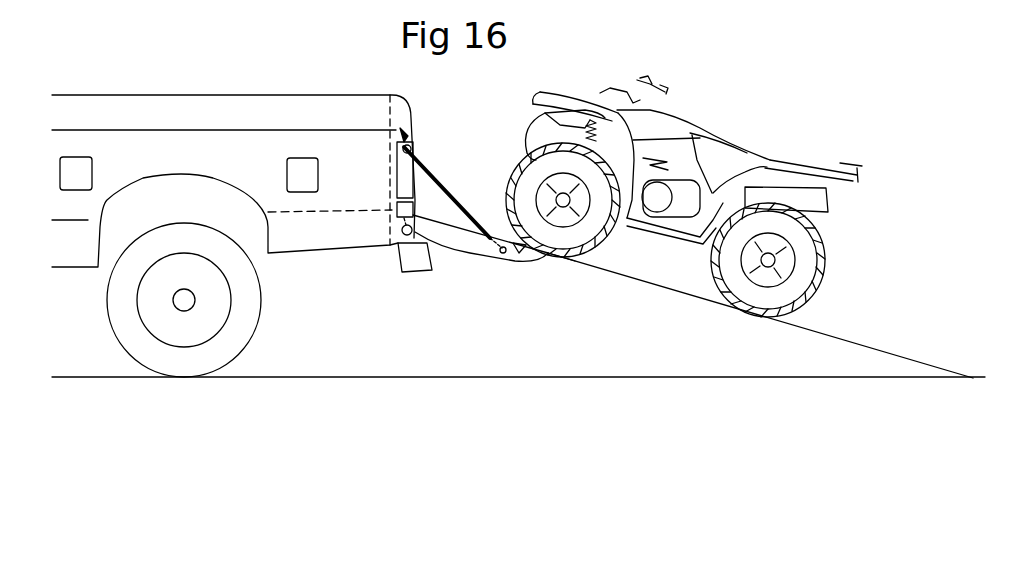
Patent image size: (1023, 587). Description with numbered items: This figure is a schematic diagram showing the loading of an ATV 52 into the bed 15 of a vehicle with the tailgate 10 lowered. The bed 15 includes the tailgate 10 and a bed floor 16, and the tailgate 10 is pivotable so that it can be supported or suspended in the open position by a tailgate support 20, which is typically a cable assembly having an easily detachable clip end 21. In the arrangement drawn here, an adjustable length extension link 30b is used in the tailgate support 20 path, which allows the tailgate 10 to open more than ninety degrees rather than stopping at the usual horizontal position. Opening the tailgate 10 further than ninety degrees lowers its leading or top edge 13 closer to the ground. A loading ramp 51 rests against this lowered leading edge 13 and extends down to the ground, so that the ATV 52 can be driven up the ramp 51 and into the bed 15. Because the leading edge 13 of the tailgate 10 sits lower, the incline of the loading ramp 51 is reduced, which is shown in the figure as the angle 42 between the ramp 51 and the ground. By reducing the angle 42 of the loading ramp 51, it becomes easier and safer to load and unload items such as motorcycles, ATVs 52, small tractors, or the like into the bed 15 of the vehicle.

The bed 15 is at (194, 105).
The bed floor 16 is at (284, 208).
The tailgate 10 is at (462, 254).
The leading or top edge 13 is at (546, 257).
The loading ramps 51 is at (818, 328).
The angle 42 is at (785, 333).
The tailgate supports 20 is at (445, 165).
The clip end 21 is at (409, 150).
The adjustable length extension link 30b is at (405, 133).
The ATV 52 is at (723, 101).